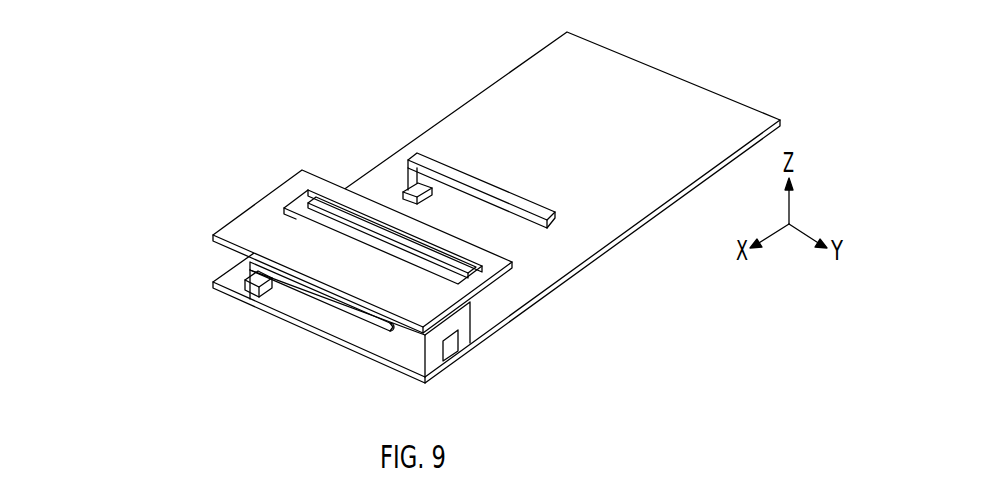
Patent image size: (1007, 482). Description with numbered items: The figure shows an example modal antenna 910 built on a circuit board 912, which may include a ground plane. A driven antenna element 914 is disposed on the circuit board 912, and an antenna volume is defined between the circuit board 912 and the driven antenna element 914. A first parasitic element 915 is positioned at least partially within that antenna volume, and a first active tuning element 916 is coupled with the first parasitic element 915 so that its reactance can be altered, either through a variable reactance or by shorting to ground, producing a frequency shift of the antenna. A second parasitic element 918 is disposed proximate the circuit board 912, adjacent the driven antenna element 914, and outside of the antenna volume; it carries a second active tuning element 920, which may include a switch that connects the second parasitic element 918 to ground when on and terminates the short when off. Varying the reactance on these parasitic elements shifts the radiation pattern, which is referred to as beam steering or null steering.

The modal antenna 910 is at (160, 64).
The circuit board 912 is at (469, 118).
The driven antenna element 914 is at (262, 208).
The first parasitic element 915 is at (337, 312).
The first active tuning element 916 is at (245, 300).
The second parasitic element 918 is at (498, 185).
The second active tuning element 920 is at (425, 200).